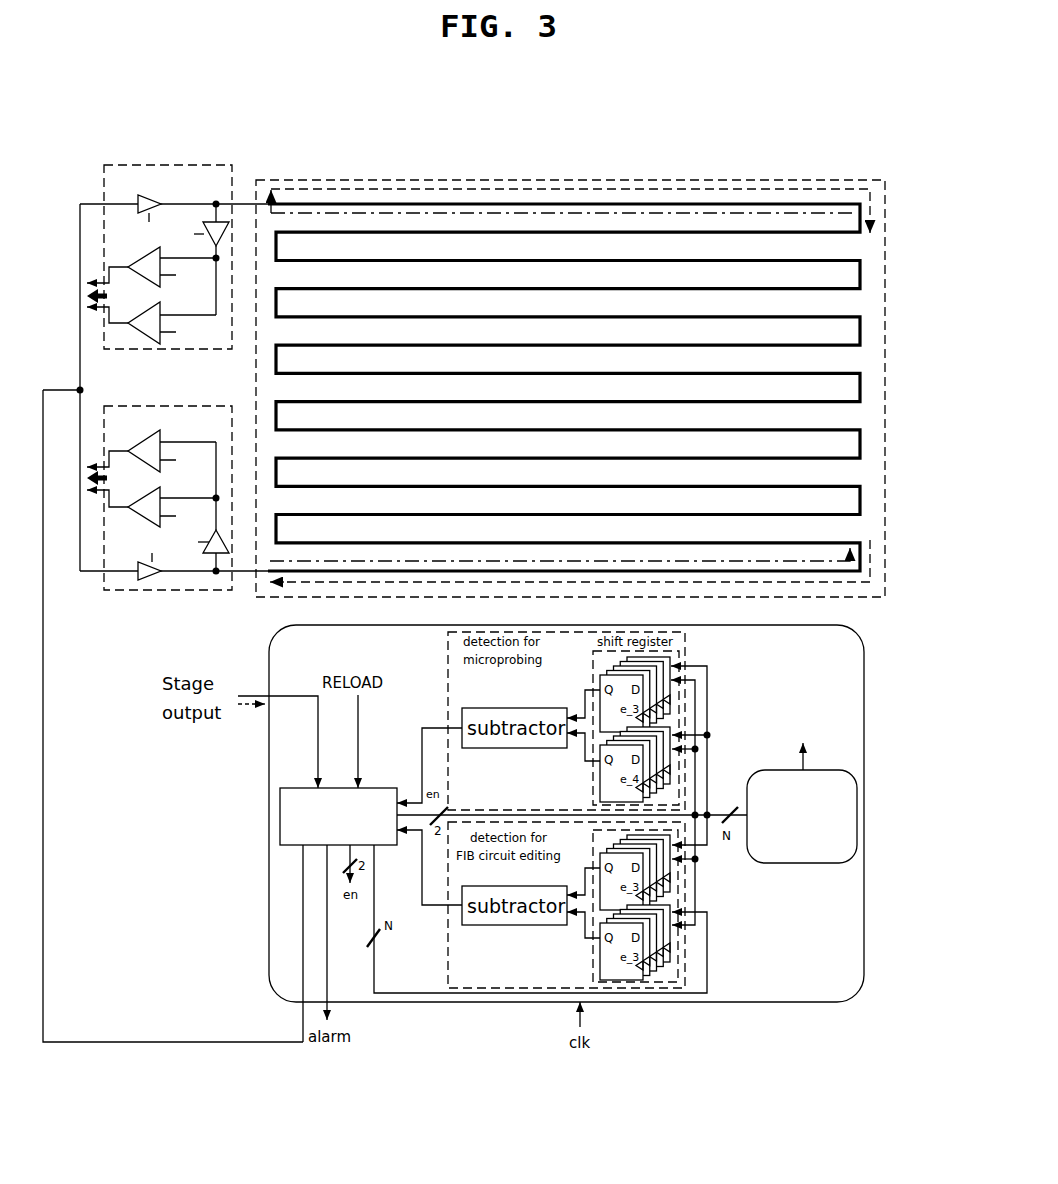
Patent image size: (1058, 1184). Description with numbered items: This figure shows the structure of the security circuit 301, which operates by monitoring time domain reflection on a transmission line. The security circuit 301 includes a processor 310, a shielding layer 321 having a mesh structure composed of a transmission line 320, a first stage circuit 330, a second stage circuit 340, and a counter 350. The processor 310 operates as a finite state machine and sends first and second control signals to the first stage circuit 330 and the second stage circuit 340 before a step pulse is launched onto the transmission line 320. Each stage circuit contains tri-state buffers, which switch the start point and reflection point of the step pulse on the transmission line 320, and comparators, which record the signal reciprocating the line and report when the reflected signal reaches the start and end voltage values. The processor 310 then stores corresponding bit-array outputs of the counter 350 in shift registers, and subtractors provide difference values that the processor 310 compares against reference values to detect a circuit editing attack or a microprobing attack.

The security circuit 301 is at (171, 919).
The processor 310 is at (280, 808).
The transmission line 320 is at (860, 387).
The shielding layer 321 is at (885, 278).
The first stage circuit 330 is at (163, 163).
The second stage circuit 340 is at (127, 592).
The counter 350 is at (857, 812).